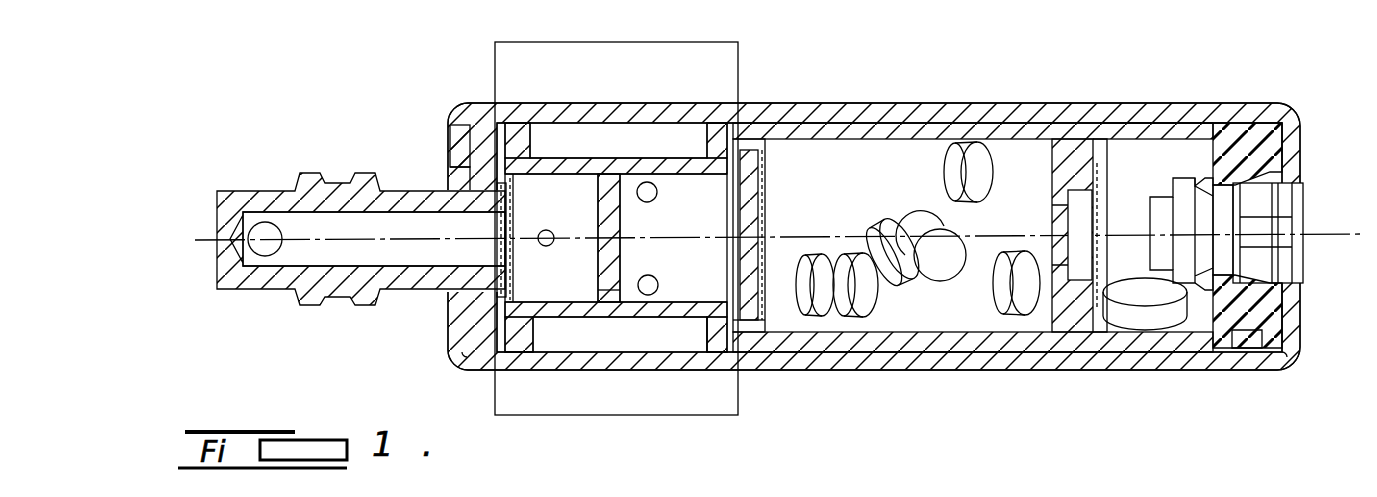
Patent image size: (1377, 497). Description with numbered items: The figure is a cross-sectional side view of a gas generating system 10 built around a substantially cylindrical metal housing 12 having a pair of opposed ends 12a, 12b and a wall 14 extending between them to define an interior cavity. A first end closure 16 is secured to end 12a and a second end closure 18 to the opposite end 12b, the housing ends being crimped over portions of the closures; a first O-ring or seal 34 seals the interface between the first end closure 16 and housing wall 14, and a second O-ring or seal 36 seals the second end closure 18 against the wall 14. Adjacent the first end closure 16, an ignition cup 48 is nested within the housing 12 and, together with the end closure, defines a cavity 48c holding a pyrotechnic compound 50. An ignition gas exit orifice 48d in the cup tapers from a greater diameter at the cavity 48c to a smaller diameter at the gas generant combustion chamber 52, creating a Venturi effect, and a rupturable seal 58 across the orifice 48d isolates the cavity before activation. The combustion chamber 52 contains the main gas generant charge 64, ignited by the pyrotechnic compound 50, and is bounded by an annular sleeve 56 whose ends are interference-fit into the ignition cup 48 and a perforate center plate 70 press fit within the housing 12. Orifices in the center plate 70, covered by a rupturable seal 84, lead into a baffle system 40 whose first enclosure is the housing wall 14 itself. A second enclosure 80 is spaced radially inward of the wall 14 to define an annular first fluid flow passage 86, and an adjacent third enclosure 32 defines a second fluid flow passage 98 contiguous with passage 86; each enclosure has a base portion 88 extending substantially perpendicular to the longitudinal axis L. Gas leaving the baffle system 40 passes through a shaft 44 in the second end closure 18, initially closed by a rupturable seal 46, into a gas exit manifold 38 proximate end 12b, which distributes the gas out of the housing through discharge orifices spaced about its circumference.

The gas generating system 10 is at (1278, 71).
The housing 12 is at (1293, 112).
The housing end 12a is at (1280, 358).
The housing second end 12b is at (460, 361).
The housing wall 14 is at (1172, 110).
The first end closure 16 is at (1285, 160).
The second end closure 18 is at (448, 138).
The third enclosure 32 is at (585, 340).
The first O-ring or seal 34 is at (1245, 348).
The second O-ring or seal 36 is at (462, 205).
The gas exit manifold 38 is at (337, 172).
The baffle system 40 is at (492, 56).
The shaft 44 is at (305, 225).
The rupturable fluid-tight seal 46 is at (514, 245).
The ignition cup 48 is at (1062, 150).
The cavity 48c is at (1113, 157).
The ignition gas exit orifice 48d is at (1052, 222).
The pyrotechnic compound 50 is at (1155, 305).
The gas generant combustion chamber 52 is at (840, 160).
The annular sleeve 56 is at (835, 345).
The rupturable fluid-tight seal 58 is at (1103, 206).
The main gas generant charge 64 is at (882, 226).
The perforate center plate 70 is at (745, 355).
The second enclosure 80 is at (642, 156).
The rupturable fluid-tight seal 84 is at (768, 165).
The first fluid flow passage 86 is at (712, 335).
The base portion 88 is at (610, 300).
The second fluid flow passage 98 is at (555, 335).
The longitudinal axis L is at (1350, 232).